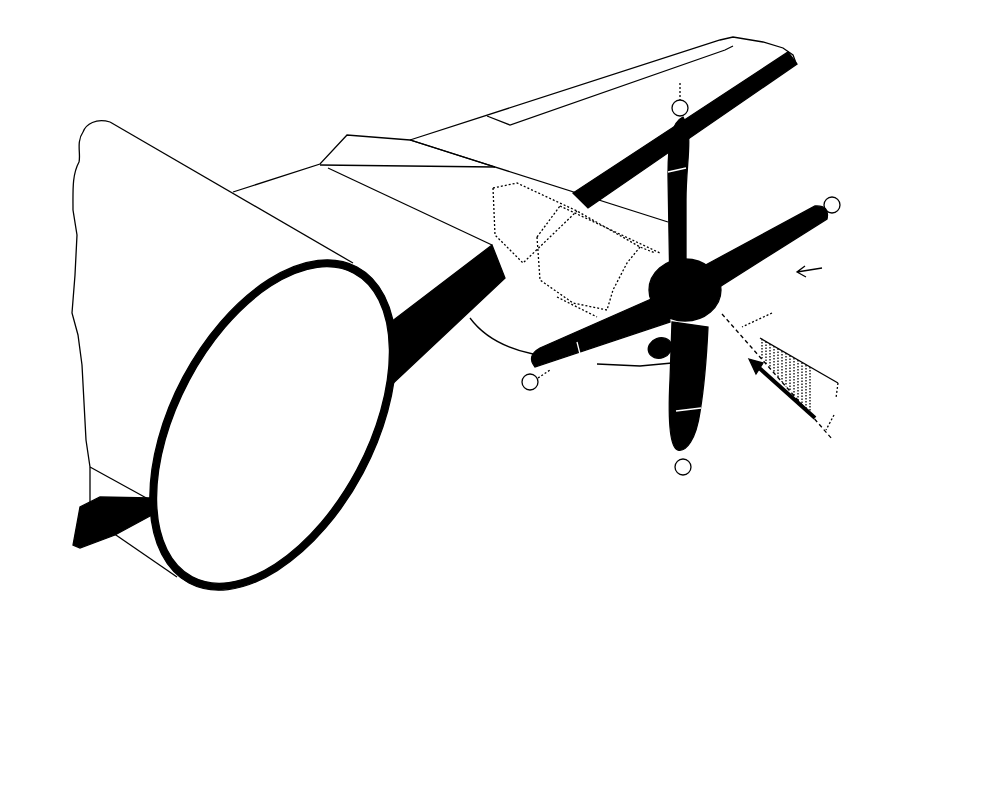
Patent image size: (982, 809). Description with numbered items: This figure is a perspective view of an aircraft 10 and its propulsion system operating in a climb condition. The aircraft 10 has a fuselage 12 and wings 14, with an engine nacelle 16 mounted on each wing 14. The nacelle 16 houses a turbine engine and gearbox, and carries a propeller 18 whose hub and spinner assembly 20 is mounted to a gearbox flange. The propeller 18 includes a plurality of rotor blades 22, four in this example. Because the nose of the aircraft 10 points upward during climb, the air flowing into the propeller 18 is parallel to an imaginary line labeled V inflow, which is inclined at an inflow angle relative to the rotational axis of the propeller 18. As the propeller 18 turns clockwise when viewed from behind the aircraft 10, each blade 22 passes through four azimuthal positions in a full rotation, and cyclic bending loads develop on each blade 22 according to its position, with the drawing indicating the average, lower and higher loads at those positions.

The aircraft 10 is at (300, 43).
The fuselage 12 is at (280, 537).
The wings 14 is at (667, 57).
The engine nacelle 16 is at (467, 208).
The propeller 18 is at (824, 270).
The hub and spinner assembly 20 is at (698, 262).
The rotor blades 22 is at (787, 227).